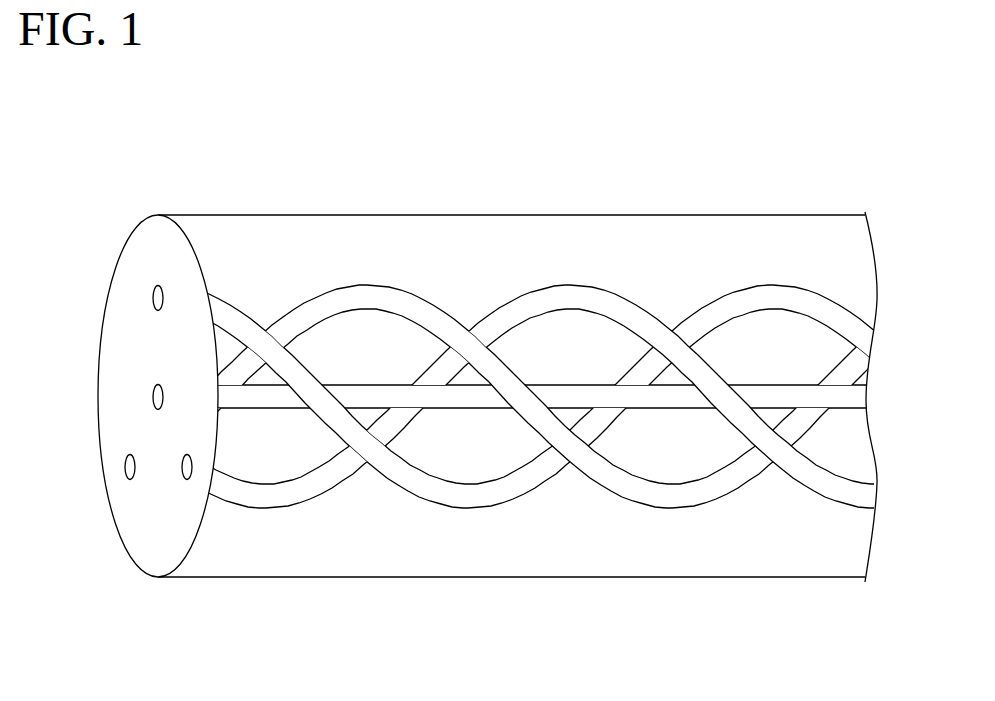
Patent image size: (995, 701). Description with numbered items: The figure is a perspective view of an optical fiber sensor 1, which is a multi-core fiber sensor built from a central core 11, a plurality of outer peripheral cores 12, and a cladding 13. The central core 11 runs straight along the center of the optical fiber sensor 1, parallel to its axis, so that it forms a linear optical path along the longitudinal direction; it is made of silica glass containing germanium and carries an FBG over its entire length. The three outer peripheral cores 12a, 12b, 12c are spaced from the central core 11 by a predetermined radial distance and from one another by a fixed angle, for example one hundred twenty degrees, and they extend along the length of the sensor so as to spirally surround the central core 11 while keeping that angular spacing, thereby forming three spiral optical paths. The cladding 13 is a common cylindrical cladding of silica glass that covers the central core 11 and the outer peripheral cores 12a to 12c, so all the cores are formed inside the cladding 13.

The optical fiber sensor 1 is at (796, 176).
The central core 11 is at (366, 397).
The outer peripheral core 12 is at (702, 150).
The outer peripheral core 12a is at (752, 298).
The outer peripheral core 12b is at (375, 298).
The outer peripheral core 12c is at (572, 298).
The cladding 13 is at (725, 548).